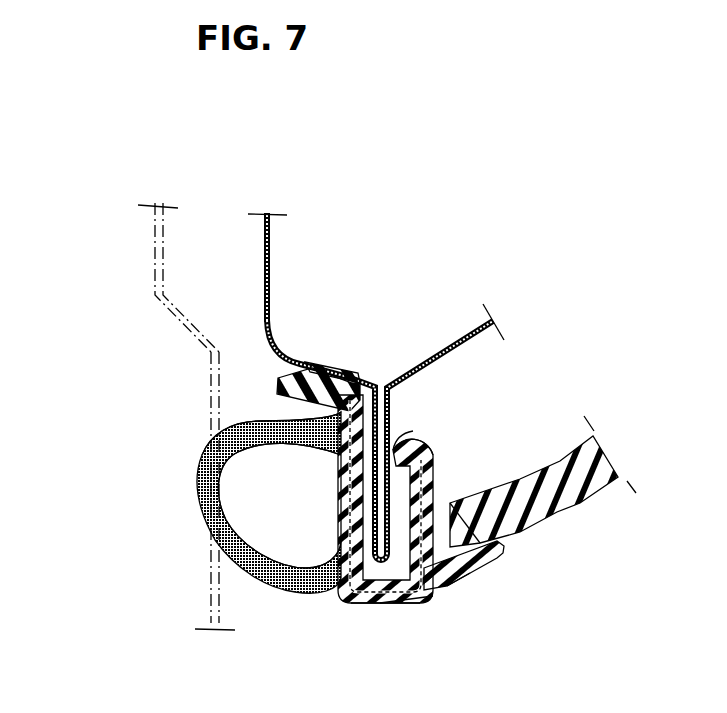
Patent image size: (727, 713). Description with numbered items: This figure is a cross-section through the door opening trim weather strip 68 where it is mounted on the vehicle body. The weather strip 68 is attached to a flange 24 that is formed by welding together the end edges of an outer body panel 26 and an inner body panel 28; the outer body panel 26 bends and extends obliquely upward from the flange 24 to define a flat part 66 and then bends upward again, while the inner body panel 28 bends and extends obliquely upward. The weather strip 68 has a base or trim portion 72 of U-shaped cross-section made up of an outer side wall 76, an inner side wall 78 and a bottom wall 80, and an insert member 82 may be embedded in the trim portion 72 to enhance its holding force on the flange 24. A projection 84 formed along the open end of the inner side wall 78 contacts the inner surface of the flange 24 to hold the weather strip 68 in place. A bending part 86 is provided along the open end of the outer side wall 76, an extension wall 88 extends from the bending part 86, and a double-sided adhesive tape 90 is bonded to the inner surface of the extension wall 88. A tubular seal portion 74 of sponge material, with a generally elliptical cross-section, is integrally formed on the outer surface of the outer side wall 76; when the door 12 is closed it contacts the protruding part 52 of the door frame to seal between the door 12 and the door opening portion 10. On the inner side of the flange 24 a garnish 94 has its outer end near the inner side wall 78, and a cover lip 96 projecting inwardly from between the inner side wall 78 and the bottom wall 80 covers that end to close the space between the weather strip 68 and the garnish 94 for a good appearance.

The door opening portion 10 is at (276, 318).
The door 12 is at (150, 260).
The flange 24 is at (425, 605).
The outer body panel 26 is at (273, 247).
The inner body panel 28 is at (440, 350).
The protruding part 52 is at (205, 574).
The flat part 66 is at (318, 383).
The door opening trim weather strip 68 is at (467, 608).
The trim portion 72 is at (362, 602).
The tubular seal portion 74 is at (203, 482).
The outer side wall 76 is at (338, 497).
The inner side wall 78 is at (386, 556).
The bottom wall 80 is at (397, 605).
The insert member 82 is at (459, 611).
The projection 84 is at (398, 424).
The bending part 86 is at (364, 372).
The extension wall 88 is at (280, 395).
The double-sided adhesive tape 90 is at (278, 378).
The garnish 94 is at (594, 513).
The cover lip 96 is at (492, 556).